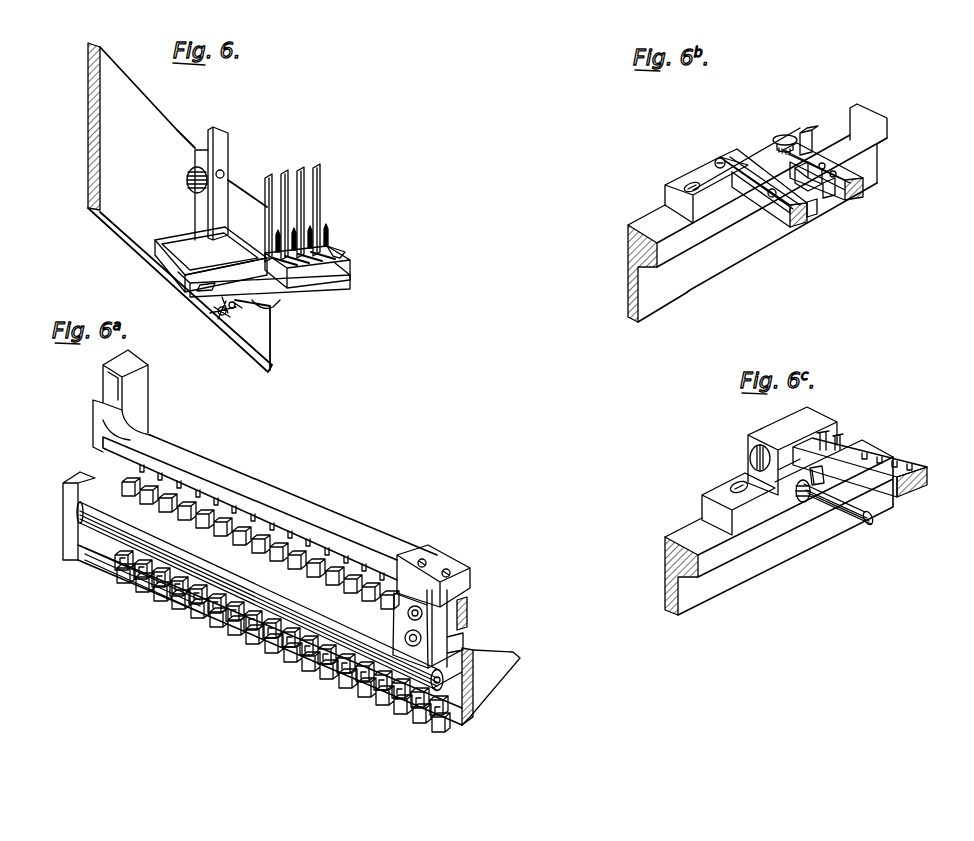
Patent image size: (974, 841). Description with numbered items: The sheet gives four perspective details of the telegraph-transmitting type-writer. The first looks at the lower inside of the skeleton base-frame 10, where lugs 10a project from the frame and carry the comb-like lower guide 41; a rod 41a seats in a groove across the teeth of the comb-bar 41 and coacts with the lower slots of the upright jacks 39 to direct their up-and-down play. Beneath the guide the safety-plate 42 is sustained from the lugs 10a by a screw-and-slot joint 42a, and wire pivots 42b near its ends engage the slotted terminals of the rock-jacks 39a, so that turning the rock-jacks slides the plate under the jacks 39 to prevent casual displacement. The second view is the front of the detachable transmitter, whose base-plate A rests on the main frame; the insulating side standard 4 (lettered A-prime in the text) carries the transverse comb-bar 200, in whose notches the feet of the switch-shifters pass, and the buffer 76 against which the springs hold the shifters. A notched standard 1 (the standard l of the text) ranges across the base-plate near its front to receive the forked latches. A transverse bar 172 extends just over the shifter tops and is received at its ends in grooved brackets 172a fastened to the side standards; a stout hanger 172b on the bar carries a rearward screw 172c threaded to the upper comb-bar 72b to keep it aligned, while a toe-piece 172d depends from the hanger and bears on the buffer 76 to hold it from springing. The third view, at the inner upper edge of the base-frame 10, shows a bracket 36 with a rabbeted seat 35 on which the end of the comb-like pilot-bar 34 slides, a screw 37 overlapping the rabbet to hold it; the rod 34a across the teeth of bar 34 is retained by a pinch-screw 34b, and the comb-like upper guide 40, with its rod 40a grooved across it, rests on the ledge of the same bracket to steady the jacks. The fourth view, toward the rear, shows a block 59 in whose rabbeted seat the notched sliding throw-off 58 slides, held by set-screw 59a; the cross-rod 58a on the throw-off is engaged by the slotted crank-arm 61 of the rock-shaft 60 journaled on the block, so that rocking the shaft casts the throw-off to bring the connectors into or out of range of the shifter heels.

In FIG. 6, the base-frame 10 is at (180, 207).
In FIG. 6B, the base-frame 10 is at (757, 213).
In FIG. 6C, the base-frame 10 is at (779, 527).
In FIG. 6, the frame-lugs 10a is at (175, 240).
In FIG. 6, the upright jacks 39 is at (327, 180).
In FIG. 6, the rock-jacks 39a is at (230, 147).
In FIG. 6, the lower guide 41 is at (342, 260).
In FIG. 6, the lower guide-rod 41a is at (327, 247).
In FIG. 6, the safety-plate 42 is at (350, 279).
In FIG. 6, the screw-and-slot joint 42a is at (273, 307).
In FIG. 6, the wire pivots 42b is at (222, 316).
In FIG. 6A, the side standard 4 is at (143, 373).
In FIG. 6A, the transverse bar 172 is at (270, 507).
In FIG. 6A, the grooved brackets 172a is at (123, 390).
In FIG. 6A, the hanger 172b is at (443, 560).
In FIG. 6A, the screw 172c is at (463, 625).
In FIG. 6A, the toe-piece 172d is at (378, 706).
In FIG. 6A, the upper comb-bar 72b is at (468, 607).
In FIG. 6A, the buffer 76 is at (260, 596).
In FIG. 6A, the standard 1 is at (455, 682).
In FIG. 6A, the base-plate A is at (513, 667).
In FIG. 6A, the comb-bar 200 is at (458, 717).
In FIG. 6B, the pilot-bar 34 is at (873, 183).
In FIG. 6B, the transverse rod 34a is at (843, 203).
In FIG. 6B, the pinch-screws 34b is at (877, 157).
In FIG. 6B, the rabbeted seats 35 is at (803, 138).
In FIG. 6B, the brackets 36 is at (702, 178).
In FIG. 6B, the screws 37 is at (793, 137).
In FIG. 6B, the upper guide 40 is at (797, 224).
In FIG. 6B, the upper guide-rod 40a is at (808, 213).
In FIG. 6C, the sliding throw-off 58 is at (857, 460).
In FIG. 6C, the cross-rod 58a is at (900, 458).
In FIG. 6C, the blocks 59 is at (777, 425).
In FIG. 6C, the set-screw 59a is at (760, 455).
In FIG. 6C, the rock-shaft 60 is at (855, 514).
In FIG. 6C, the crank-arms 61 is at (812, 476).